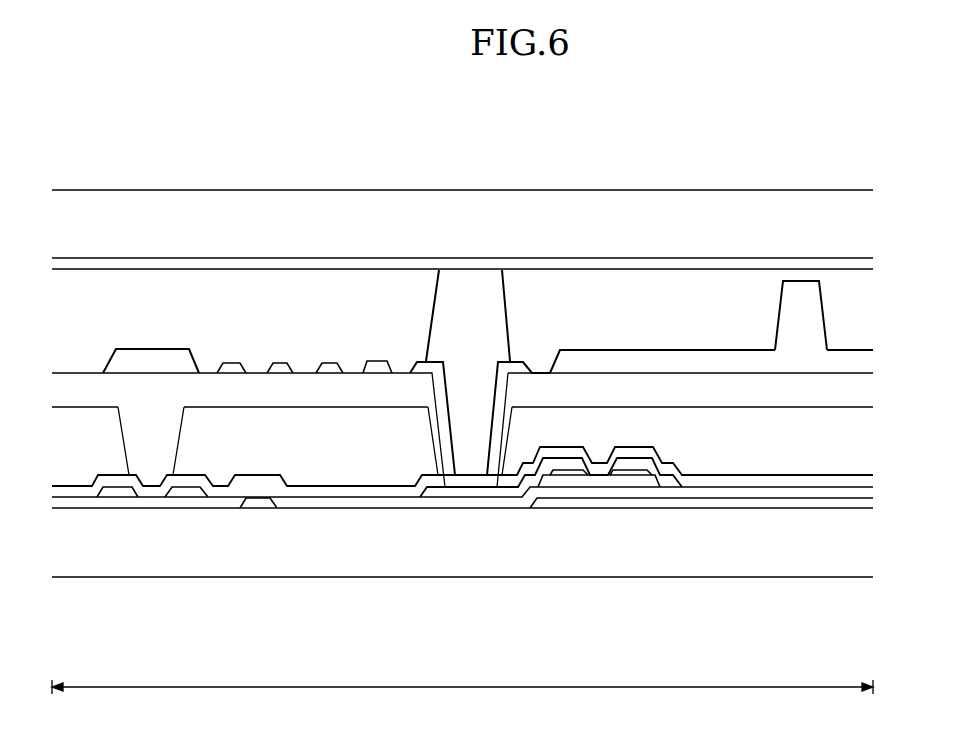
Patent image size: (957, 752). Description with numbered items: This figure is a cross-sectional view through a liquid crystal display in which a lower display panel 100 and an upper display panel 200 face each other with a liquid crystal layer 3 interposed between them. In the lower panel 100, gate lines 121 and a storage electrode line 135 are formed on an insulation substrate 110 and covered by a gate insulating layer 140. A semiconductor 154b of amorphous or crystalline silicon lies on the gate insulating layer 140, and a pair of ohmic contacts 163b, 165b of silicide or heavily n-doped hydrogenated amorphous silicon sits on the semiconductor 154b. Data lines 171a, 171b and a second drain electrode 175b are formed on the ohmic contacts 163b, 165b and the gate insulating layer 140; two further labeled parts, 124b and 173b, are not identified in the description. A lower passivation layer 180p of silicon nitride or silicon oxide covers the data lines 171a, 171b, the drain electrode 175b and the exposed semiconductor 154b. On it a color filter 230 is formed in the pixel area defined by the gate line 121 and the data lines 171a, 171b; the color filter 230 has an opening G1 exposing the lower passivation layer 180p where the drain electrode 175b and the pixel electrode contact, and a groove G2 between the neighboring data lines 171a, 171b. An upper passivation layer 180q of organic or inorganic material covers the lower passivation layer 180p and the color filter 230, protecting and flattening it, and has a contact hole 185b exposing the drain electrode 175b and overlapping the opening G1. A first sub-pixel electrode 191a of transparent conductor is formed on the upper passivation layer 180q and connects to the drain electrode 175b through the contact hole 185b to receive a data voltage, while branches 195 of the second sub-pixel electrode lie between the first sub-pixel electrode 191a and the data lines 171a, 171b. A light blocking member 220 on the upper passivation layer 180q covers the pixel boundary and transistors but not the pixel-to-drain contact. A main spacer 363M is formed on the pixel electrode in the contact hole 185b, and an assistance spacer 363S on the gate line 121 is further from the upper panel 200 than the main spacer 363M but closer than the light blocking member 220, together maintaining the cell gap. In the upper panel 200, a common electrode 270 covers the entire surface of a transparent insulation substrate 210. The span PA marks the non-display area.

The lower display panel 100 is at (488, 462).
The insulation substrate 110 is at (464, 568).
The gate line 121 is at (752, 507).
The gate electrode 124b is at (585, 503).
The storage electrode line 135 is at (258, 503).
The gate insulating layer 140 is at (473, 503).
The semiconductor 154b is at (606, 477).
The ohmic contact 163b is at (630, 473).
The ohmic contact 165b is at (567, 473).
The data line 171a is at (119, 493).
The data line 171b is at (185, 493).
The source electrode 173b is at (645, 468).
The second drain electrode 175b is at (510, 492).
The lower passivation layer 180p is at (307, 493).
The upper passivation layer 180q is at (462, 461).
The contact hole 185b is at (500, 400).
The first sub-pixel electrode 191a is at (279, 370).
The branch 195 is at (230, 370).
The upper display panel 200 is at (488, 205).
The transparent insulation substrate 210 is at (649, 210).
The light blocking member 220 is at (153, 365).
The color filter 230 is at (462, 462).
The common electrode 270 is at (576, 265).
The liquid crystal layer 3 is at (666, 251).
The main spacer 363M is at (468, 295).
The assistance spacer 363S is at (800, 300).
The opening G1 is at (432, 433).
The groove G2 is at (125, 437).
The non-display area PA is at (462, 699).